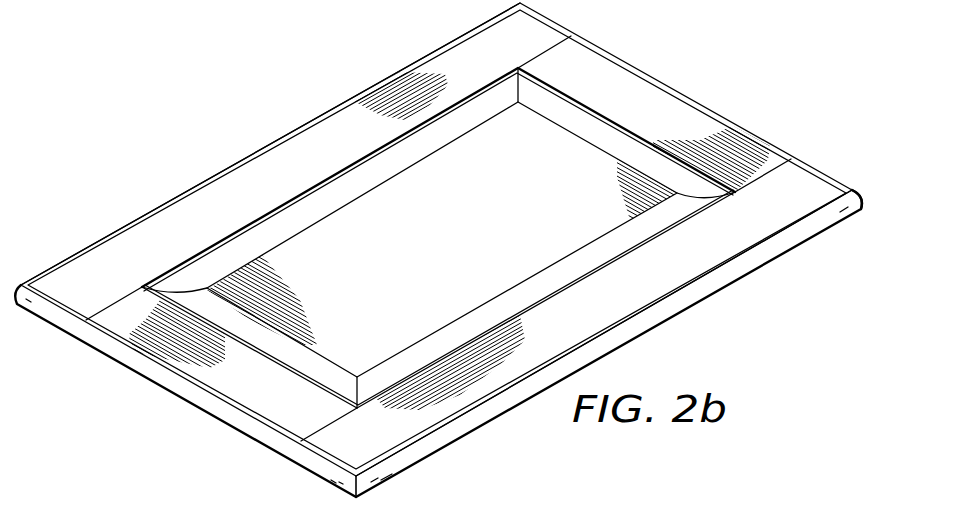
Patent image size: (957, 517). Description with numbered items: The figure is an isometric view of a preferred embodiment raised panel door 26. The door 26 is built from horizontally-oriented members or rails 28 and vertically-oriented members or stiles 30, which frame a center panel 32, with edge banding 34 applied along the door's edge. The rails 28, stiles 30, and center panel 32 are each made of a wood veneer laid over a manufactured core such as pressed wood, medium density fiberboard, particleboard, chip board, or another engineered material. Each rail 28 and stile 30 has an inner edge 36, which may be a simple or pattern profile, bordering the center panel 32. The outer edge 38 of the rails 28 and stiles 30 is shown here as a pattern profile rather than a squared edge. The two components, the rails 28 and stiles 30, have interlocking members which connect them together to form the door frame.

The raised panel door 26 is at (311, 64).
The rail 28 is at (612, 56).
The stile 30 is at (207, 185).
The center panel 32 is at (424, 254).
The edge banding 34 is at (92, 350).
The inner edge 36 is at (330, 182).
The outer edge 38 is at (857, 192).